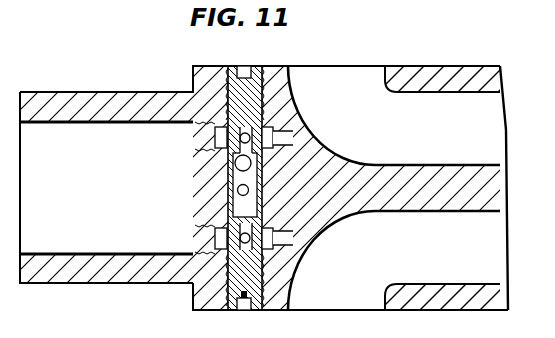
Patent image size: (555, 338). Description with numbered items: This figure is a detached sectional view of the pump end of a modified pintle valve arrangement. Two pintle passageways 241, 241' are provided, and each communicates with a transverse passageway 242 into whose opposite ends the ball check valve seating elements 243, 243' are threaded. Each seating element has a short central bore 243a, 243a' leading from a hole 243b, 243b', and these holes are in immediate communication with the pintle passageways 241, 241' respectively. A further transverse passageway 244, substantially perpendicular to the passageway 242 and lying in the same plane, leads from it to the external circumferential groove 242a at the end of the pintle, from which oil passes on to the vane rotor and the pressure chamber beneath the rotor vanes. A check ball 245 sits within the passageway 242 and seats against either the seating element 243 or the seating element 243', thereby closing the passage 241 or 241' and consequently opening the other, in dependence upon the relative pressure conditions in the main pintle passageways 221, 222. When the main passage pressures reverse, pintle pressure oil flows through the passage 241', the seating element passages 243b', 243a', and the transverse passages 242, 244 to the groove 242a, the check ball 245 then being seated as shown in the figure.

The pintle passageway 221 is at (437, 112).
The pintle passageway 222 is at (425, 270).
The pintle passageway 241 is at (313, 129).
The pintle passageway 241' is at (309, 245).
The transverse passageway 242 is at (232, 207).
The external circumferential groove 242a is at (243, 67).
The ball check valve seating element 243 is at (277, 190).
The ball check valve seating element 243' is at (223, 313).
The central bore 243a is at (324, 145).
The central bore 243a' is at (322, 229).
The hole 243b is at (168, 136).
The hole 243b' is at (173, 239).
The transverse passageway 244 is at (238, 189).
The check ball 245 is at (235, 165).